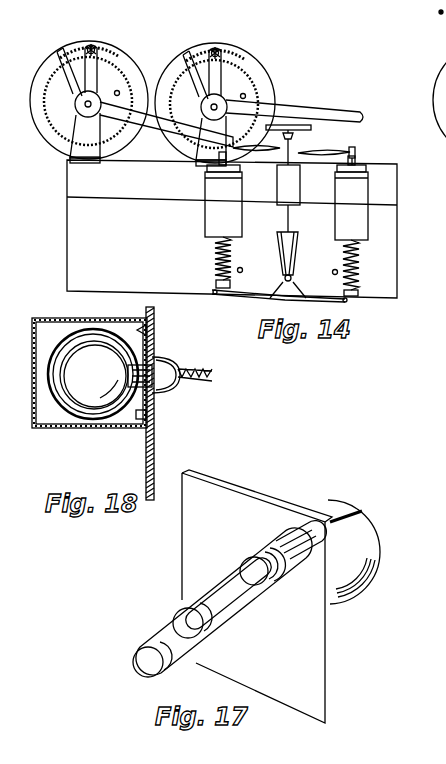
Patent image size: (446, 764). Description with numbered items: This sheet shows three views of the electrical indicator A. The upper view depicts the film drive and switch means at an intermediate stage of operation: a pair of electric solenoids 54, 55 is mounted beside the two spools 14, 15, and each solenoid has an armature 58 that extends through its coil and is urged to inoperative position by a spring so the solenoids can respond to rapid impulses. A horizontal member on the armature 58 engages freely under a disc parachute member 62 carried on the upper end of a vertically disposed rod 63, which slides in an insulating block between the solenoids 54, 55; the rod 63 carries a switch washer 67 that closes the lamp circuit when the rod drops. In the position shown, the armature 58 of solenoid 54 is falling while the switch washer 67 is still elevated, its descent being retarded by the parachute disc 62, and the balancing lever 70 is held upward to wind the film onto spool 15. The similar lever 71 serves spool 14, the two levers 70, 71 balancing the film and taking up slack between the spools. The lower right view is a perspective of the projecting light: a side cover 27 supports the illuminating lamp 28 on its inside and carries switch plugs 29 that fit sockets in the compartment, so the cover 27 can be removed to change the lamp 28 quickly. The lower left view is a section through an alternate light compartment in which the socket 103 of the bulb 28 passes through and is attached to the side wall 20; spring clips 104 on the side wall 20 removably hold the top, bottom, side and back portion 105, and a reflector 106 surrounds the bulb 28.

In FIG. 14, the spool 14 is at (128, 60).
In FIG. 14, the spool 15 is at (253, 66).
In FIG. 14, the lever or bar 71 is at (152, 121).
In FIG. 14, the lever or bar 70 is at (357, 118).
In FIG. 14, the disc parachute member 62 is at (287, 128).
In FIG. 14, the switch washer 67 is at (300, 132).
In FIG. 14, the armature 58 is at (352, 155).
In FIG. 14, the electric solenoid 54 is at (362, 198).
In FIG. 14, the electric solenoid 55 is at (205, 218).
In FIG. 14, the vertically disposed rod 63 is at (283, 220).
In FIG. 14, the indicator A is at (432, 93).
In FIG. 18, the reflector 106 is at (70, 340).
In FIG. 18, the top, bottom, side and back portion 105 is at (49, 414).
In FIG. 18, the spring clips or brackets 104 is at (150, 333).
In FIG. 18, the socket 103 is at (165, 362).
In FIG. 18, the side wall 20 is at (150, 455).
In FIG. 18, the illuminating lamp 28 is at (93, 392).
In FIG. 17, the illuminating lamp 28 is at (372, 572).
In FIG. 17, the side cover 27 is at (298, 675).
In FIG. 17, the switch plugs 29 is at (358, 515).